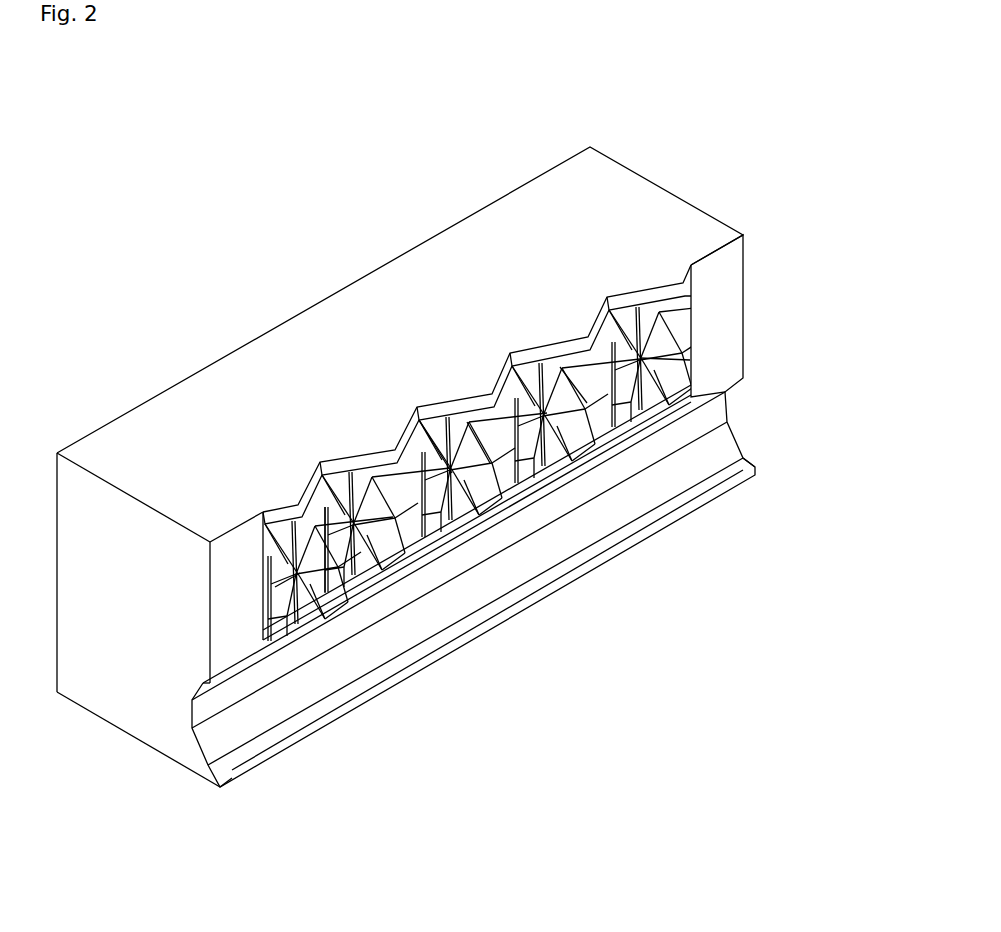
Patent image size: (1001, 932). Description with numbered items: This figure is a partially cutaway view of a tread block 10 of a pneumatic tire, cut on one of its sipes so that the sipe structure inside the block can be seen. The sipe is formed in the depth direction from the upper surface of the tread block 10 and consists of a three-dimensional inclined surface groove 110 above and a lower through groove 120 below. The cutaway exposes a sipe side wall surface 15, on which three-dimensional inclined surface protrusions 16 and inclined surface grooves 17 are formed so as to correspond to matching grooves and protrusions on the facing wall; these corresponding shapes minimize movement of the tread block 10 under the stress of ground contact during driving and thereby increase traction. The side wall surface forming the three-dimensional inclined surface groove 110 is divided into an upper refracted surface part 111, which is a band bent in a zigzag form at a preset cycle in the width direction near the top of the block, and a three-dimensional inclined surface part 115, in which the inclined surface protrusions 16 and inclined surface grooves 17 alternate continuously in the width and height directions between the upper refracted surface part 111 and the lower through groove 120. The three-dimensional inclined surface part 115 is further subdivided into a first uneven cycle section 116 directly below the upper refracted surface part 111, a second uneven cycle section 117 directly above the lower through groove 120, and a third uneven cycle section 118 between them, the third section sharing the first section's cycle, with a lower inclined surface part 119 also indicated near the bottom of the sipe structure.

The tread block 10 is at (672, 190).
The sipe side wall surface 15 is at (762, 255).
The inclined surface protrusion 16 is at (330, 530).
The inclined surface groove 17 is at (300, 590).
The three-dimensional inclined surface groove 110 is at (817, 305).
The upper refracted surface part 111 is at (691, 312).
The three-dimensional inclined surface part 115 is at (691, 350).
The first uneven cycle section 116 is at (640, 385).
The second uneven cycle section 117 is at (502, 467).
The third uneven cycle section 118 is at (580, 408).
The lower inclined surface part 119 is at (425, 515).
The lower through groove 120 is at (273, 703).